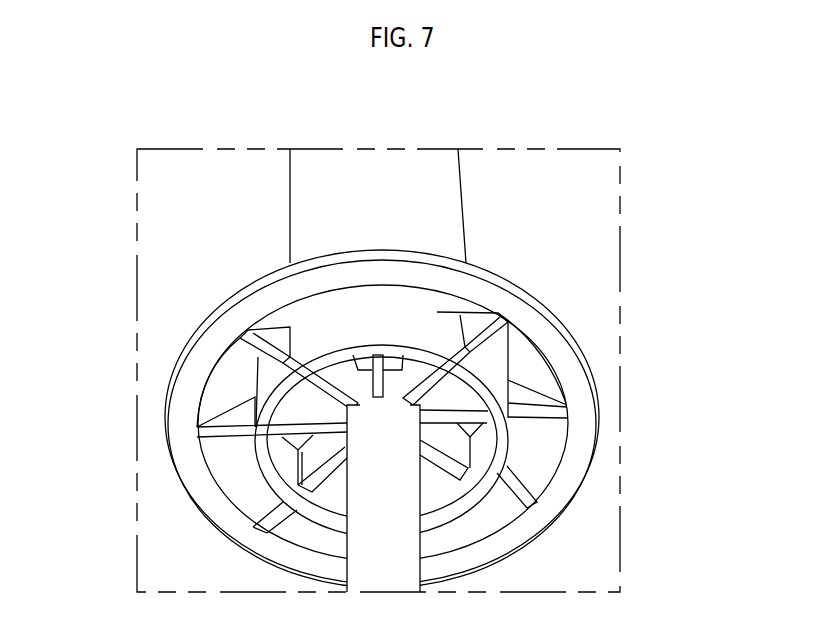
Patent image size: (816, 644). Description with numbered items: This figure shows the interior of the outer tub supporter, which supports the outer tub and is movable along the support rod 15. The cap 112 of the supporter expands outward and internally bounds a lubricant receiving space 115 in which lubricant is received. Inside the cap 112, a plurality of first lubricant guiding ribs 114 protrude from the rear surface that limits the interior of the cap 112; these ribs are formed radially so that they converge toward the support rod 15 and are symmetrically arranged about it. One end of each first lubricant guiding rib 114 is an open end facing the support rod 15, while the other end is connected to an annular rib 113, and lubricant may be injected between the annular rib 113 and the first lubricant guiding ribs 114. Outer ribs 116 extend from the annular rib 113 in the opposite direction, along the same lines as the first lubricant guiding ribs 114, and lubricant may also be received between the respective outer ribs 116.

The support rod 15 is at (400, 497).
The cap 112 is at (428, 260).
The annular rib 113 is at (498, 313).
The first lubricant guiding ribs 114 is at (508, 395).
The lubricant receiving space 115 is at (450, 388).
The outer ribs 116 is at (368, 308).